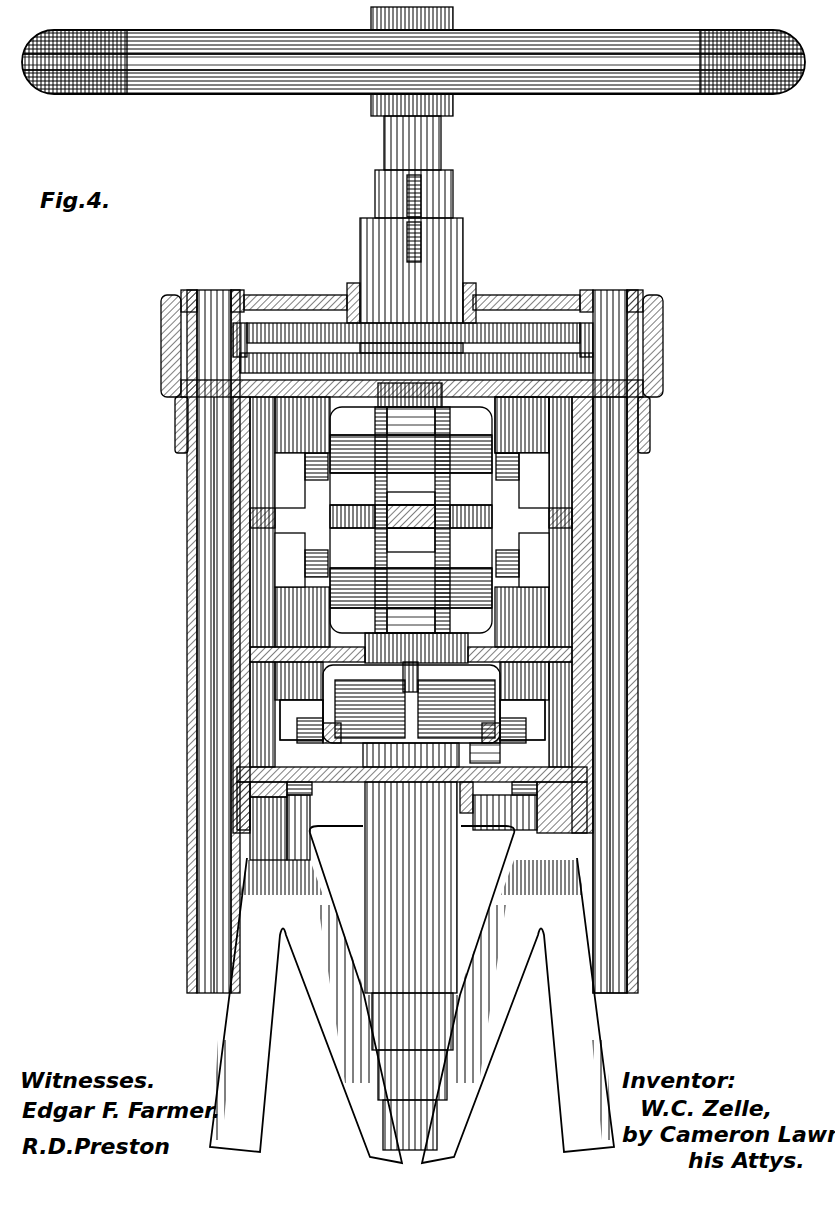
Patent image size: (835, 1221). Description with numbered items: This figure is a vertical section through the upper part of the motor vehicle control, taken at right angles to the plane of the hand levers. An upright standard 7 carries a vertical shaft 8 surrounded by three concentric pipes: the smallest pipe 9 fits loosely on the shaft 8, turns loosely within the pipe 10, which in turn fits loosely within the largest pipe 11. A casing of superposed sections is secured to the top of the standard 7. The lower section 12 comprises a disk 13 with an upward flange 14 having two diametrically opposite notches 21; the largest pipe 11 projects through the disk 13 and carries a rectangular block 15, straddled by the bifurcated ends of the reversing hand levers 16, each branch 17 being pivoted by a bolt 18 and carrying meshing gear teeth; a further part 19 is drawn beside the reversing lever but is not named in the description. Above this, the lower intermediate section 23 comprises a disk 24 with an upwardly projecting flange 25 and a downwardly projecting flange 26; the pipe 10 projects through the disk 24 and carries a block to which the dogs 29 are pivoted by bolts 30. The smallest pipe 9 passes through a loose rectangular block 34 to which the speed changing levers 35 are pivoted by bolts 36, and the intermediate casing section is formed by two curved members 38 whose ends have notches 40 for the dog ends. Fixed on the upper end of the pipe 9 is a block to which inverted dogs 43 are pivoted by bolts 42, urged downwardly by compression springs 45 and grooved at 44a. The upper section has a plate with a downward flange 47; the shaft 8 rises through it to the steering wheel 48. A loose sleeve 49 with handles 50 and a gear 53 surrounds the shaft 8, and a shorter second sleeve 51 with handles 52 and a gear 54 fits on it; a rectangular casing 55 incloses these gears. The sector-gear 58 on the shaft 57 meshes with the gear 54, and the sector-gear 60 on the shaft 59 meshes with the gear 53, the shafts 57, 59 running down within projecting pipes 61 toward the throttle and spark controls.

The steering wheel 48 is at (413, 61).
The shaft 8 is at (412, 633).
The loose sleeve 49 is at (440, 188).
The arms or handles 50 is at (407, 186).
The second sleeve 51 is at (442, 266).
The arms or handles 52 is at (407, 233).
The rectangular casing 55 is at (161, 349).
The gear 54 is at (392, 333).
The sector-gear 58 is at (243, 322).
The sector-gear 60 is at (580, 345).
The gear 53 is at (312, 362).
The projecting pipes 61 is at (640, 632).
The shaft 59 is at (605, 515).
The shaft 57 is at (205, 556).
The downwardly extending flange 47 is at (245, 416).
The curved members 38 is at (240, 476).
The upwardly projecting flange 25 is at (245, 610).
The dogs 43 is at (352, 462).
The compression springs 45 is at (522, 425).
The bolts 42 is at (522, 425).
The disk 24 is at (302, 617).
The pivoted member or dog 29 is at (462, 585).
The notch 40 is at (301, 515).
The bolt 36 is at (517, 478).
The bolts 30 is at (518, 556).
The speed changing levers 35 is at (411, 520).
The rectangular block 34 is at (405, 524).
The groove 44a is at (400, 500).
The pipe or hollow shaft 10 is at (449, 716).
The lower intermediate section 23 is at (575, 653).
The downwardly projecting flange 26 is at (590, 712).
The notches 21 is at (301, 705).
The bolt 18 is at (505, 718).
The branch 17 is at (398, 704).
The hand lever 16 is at (451, 702).
The pinion 19 is at (500, 752).
The flange 14 is at (590, 762).
The rectangular block 15 is at (420, 772).
The lower section 12 is at (284, 821).
The disk 13 is at (523, 807).
The largest pipe 11 is at (411, 887).
The smallest pipe 9 is at (412, 1075).
The standard 7 is at (222, 1013).